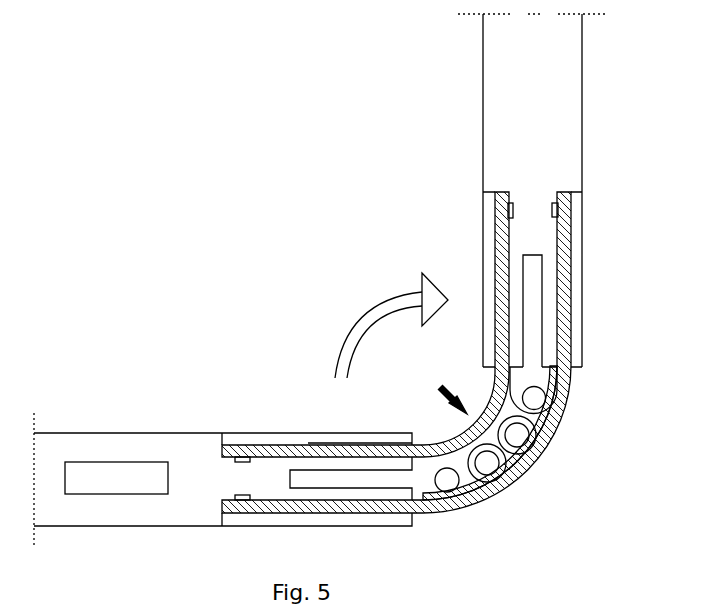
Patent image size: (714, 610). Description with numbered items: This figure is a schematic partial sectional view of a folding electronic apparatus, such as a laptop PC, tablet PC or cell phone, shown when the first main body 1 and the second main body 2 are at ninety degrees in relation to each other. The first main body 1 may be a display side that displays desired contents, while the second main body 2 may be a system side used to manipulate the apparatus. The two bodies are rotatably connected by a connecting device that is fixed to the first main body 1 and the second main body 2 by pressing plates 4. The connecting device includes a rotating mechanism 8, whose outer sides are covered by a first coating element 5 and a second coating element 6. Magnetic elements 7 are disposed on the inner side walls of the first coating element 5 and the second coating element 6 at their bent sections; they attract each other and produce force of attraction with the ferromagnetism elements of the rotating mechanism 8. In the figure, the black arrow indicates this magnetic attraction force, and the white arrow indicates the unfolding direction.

The first main body 1 is at (569, 127).
The second main body 2 is at (182, 445).
The pressing plates 4 is at (420, 352).
The first coating element 5 is at (563, 380).
The second coating element 6 is at (503, 252).
The magnetic elements 7 is at (543, 428).
The rotating mechanism 8 is at (425, 492).